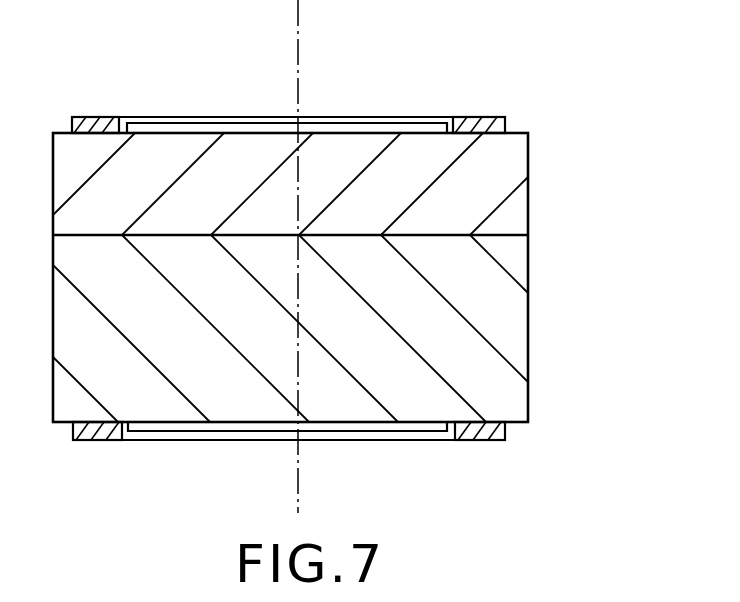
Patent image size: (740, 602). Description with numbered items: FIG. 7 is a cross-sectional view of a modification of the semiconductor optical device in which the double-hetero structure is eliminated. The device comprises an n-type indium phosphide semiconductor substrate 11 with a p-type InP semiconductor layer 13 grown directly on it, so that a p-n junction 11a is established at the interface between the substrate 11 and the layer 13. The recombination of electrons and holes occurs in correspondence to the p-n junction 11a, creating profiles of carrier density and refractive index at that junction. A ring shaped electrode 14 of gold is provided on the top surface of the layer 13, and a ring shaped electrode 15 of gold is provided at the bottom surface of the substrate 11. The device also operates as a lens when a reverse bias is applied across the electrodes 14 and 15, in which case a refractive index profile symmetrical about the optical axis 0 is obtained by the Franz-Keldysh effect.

The optical axis 0 is at (298, 25).
The semiconductor substrate 11 is at (522, 335).
The p-n junction 11a is at (532, 236).
The p-type semiconductor layer 13 is at (517, 168).
The ring shaped electrode 14 is at (504, 115).
The ring shaped electrode 15 is at (505, 441).